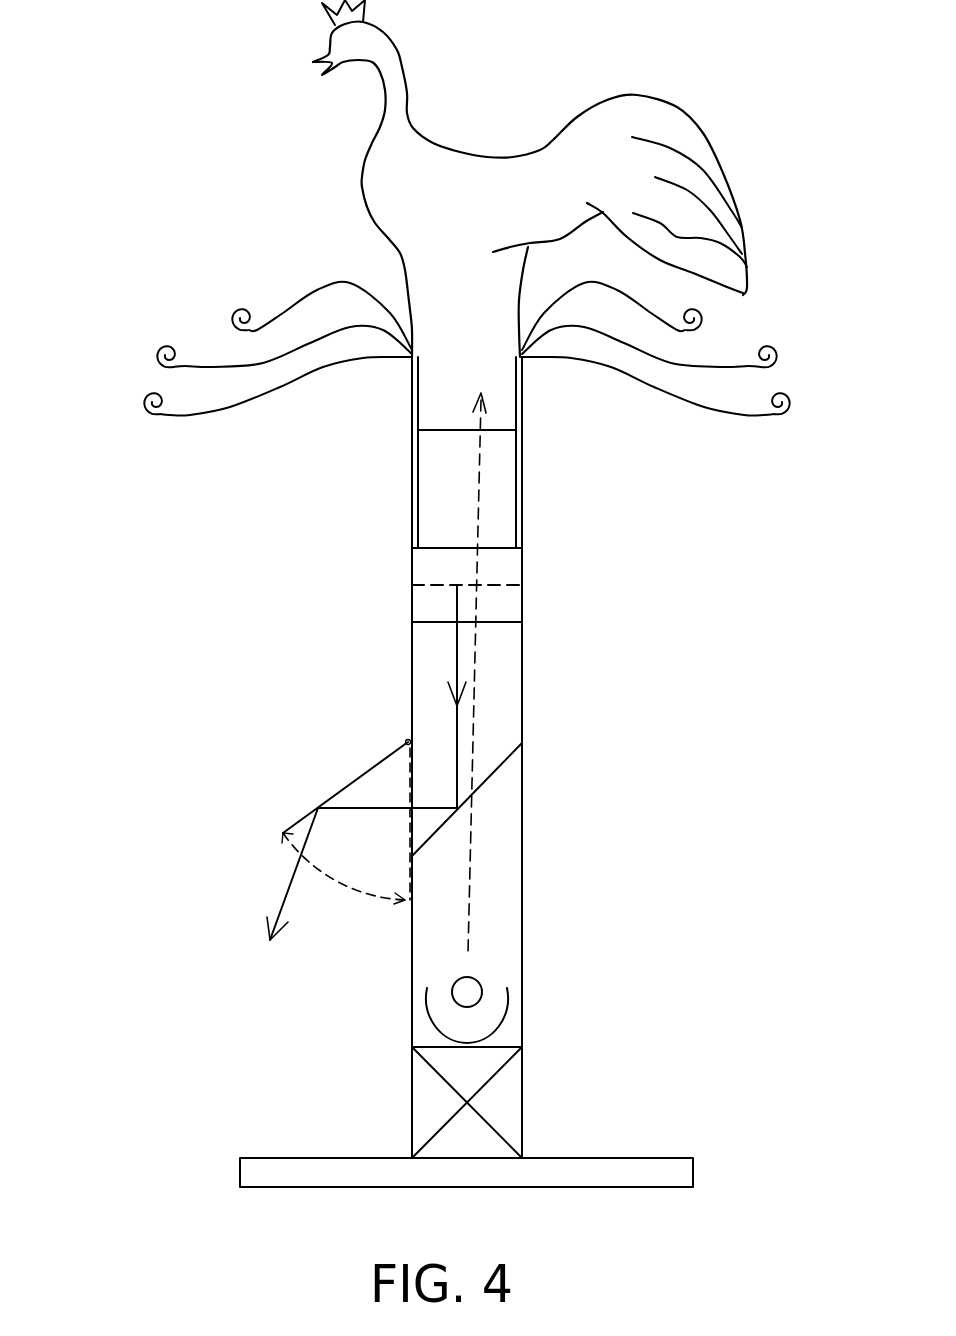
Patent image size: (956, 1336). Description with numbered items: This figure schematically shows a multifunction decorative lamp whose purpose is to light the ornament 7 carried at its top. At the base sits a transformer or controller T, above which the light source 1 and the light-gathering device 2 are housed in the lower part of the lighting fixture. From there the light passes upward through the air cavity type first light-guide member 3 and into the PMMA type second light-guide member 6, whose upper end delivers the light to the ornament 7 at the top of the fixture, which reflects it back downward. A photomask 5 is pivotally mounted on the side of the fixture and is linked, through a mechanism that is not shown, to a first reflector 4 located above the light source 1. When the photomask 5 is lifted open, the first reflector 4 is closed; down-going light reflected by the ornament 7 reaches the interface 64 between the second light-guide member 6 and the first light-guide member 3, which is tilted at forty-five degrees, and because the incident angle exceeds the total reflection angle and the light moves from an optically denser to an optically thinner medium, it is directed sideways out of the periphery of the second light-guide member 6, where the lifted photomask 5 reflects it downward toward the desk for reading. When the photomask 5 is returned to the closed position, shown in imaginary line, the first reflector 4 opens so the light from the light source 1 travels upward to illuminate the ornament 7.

The weathercock ornament 7 is at (408, 246).
The first light-guide member 3 is at (493, 870).
The first reflector 4 is at (499, 587).
The second light-guide member 6 is at (430, 676).
The interface 64 is at (500, 762).
The photomask 5 is at (357, 779).
The light source 1 is at (467, 990).
The light-gathering device 2 is at (502, 1017).
The transformer or controller T is at (502, 1097).